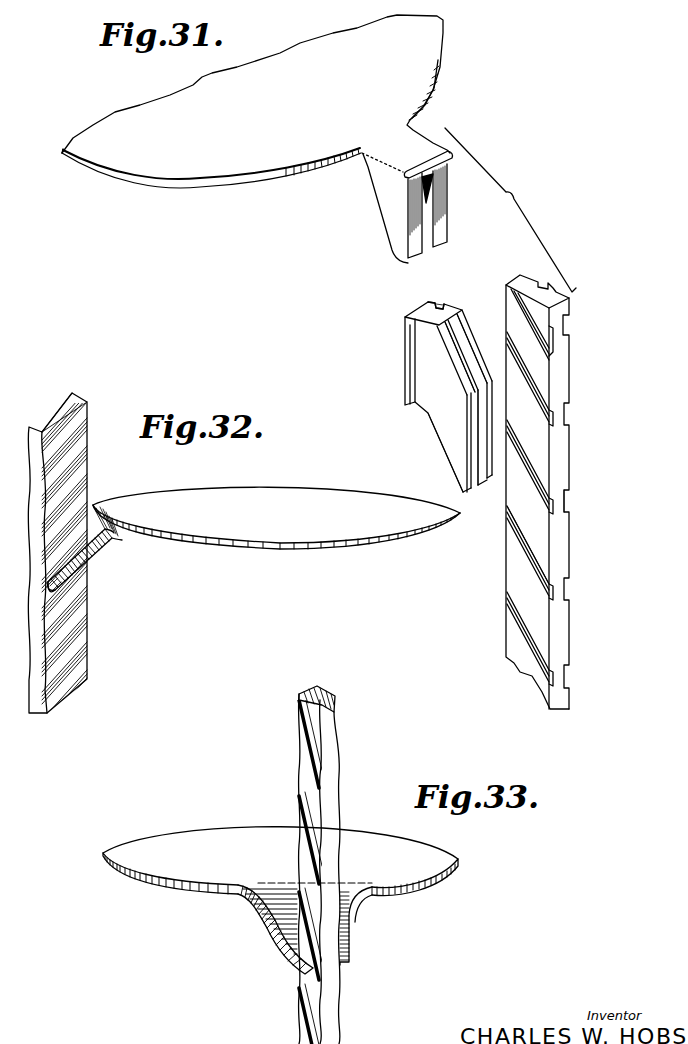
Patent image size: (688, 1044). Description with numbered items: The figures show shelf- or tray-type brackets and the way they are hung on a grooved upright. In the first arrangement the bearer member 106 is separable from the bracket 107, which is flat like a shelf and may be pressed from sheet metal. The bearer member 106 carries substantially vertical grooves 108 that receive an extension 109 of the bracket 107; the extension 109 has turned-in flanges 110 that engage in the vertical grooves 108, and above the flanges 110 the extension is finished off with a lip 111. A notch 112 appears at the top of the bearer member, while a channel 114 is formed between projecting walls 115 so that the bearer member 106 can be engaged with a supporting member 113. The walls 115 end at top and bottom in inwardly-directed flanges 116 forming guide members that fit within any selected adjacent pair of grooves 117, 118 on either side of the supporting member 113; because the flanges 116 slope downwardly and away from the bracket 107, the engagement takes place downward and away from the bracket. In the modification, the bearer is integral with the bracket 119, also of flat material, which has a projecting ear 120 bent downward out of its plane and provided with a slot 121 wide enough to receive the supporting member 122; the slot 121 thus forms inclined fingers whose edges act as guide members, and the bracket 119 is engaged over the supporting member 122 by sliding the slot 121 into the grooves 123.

In FIG. 31, the bearer member 106 is at (430, 393).
In FIG. 31, the bracket 107 is at (431, 86).
In FIG. 31, the vertical grooves 108 is at (420, 323).
In FIG. 31, the extension 109 is at (433, 147).
In FIG. 31, the flanges 110 is at (442, 243).
In FIG. 31, the lip 111 is at (450, 170).
In FIG. 31, the top notch 112 is at (425, 308).
In FIG. 31, the supporting member 113 is at (576, 449).
In FIG. 31, the channel 114 is at (477, 437).
In FIG. 31, the projecting walls 115 is at (443, 423).
In FIG. 31, the inwardly-directed flanges 116 is at (477, 440).
In FIG. 31, the groove 117 is at (571, 503).
In FIG. 31, the groove 118 is at (530, 552).
In FIG. 32, the bracket 119 is at (280, 537).
In FIG. 33, the bracket 119 is at (207, 838).
In FIG. 32, the projecting ear 120 is at (100, 540).
In FIG. 33, the projecting ear 120 is at (287, 918).
In FIG. 32, the slot 121 is at (70, 557).
In FIG. 33, the slot 121 is at (308, 927).
In FIG. 33, the supporting member 122 is at (330, 777).
In FIG. 32, the grooves 123 is at (42, 682).
In FIG. 33, the grooves 123 is at (340, 1013).